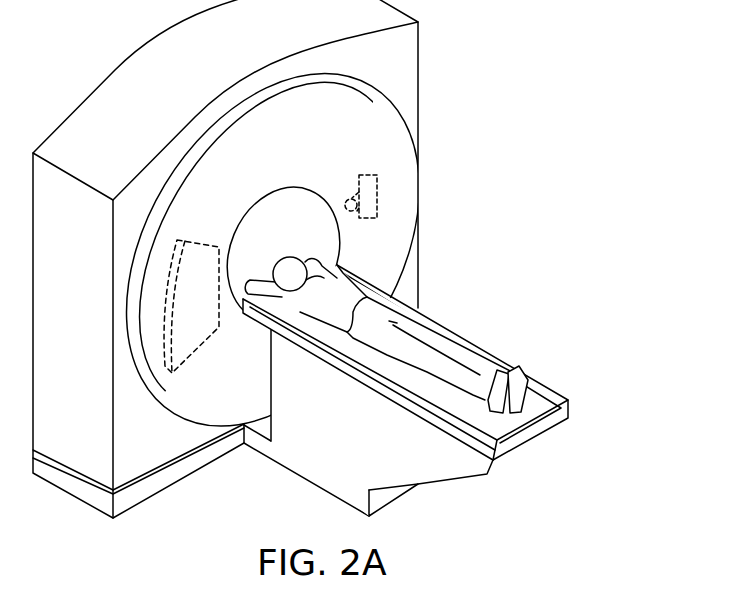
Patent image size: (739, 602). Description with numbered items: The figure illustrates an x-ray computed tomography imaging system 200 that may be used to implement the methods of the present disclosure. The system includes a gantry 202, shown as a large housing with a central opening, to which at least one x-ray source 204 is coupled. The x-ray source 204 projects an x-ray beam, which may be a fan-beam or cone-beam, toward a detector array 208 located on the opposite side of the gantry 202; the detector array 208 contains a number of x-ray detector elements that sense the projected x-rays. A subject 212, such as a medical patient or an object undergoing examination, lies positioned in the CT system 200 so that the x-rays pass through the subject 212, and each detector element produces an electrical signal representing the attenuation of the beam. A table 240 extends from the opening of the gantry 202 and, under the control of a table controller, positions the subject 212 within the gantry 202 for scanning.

The x-ray CT imaging system 200 is at (508, 75).
The gantry 202 is at (418, 155).
The x-ray source 204 is at (363, 173).
The detector array 208 is at (207, 240).
The subject 212 is at (350, 277).
The table 240 is at (553, 392).